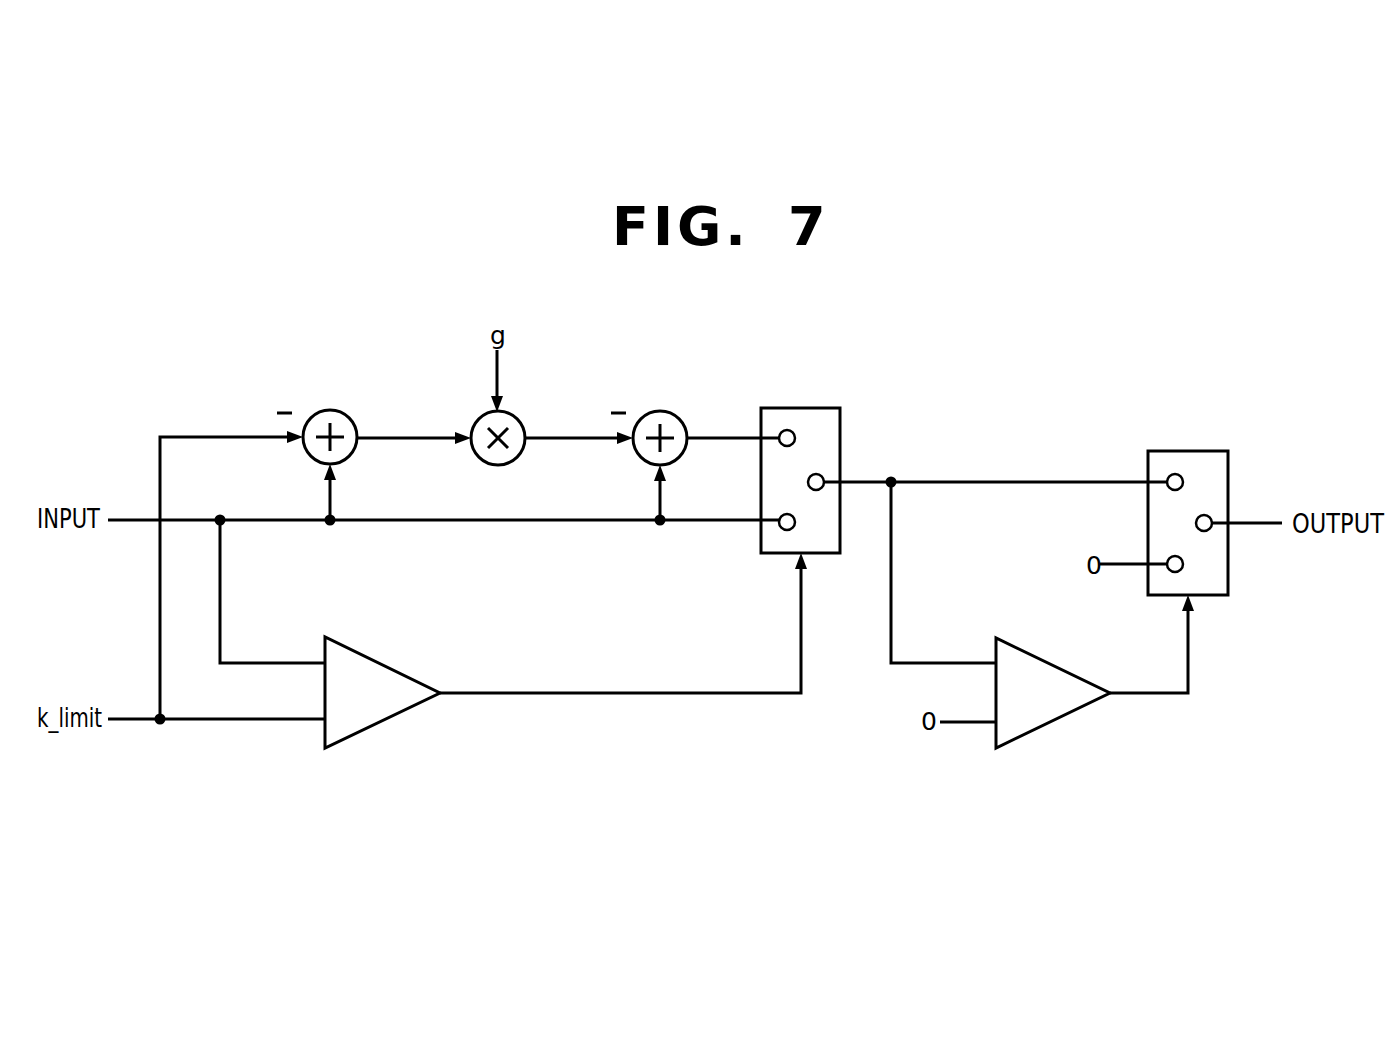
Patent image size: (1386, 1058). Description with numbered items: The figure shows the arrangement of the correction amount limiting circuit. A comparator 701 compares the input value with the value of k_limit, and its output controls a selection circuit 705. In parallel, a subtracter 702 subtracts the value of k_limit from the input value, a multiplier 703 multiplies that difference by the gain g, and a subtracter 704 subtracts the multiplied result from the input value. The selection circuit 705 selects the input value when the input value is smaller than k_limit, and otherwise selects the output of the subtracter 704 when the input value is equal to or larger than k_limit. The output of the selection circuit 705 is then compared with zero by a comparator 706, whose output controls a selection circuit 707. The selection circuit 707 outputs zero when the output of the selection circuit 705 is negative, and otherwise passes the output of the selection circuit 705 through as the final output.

The comparator 701 is at (376, 658).
The subtracter 702 is at (348, 417).
The multiplier 703 is at (515, 417).
The subtracter 704 is at (677, 419).
The selection circuit 705 is at (812, 407).
The comparator 706 is at (1045, 659).
The selection circuit 707 is at (1200, 450).